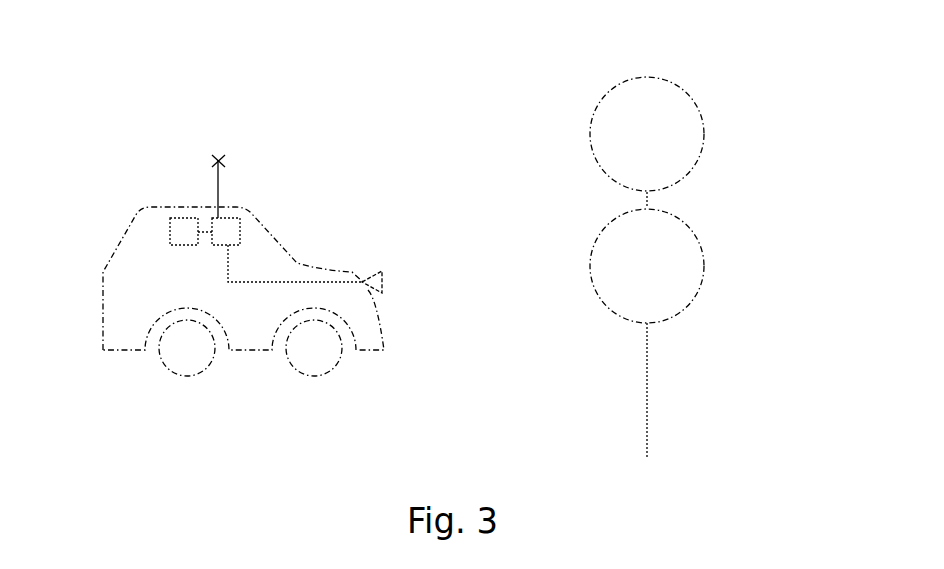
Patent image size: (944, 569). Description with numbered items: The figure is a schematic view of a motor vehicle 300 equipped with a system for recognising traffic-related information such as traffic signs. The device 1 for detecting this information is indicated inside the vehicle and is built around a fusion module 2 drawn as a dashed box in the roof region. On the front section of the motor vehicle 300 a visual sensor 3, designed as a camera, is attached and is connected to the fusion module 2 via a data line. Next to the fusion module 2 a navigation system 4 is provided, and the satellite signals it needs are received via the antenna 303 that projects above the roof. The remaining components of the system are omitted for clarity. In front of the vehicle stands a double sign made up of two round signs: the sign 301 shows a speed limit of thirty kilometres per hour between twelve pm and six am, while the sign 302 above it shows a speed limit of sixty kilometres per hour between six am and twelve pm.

The device for detecting traffic-related information 1 is at (170, 260).
The fusion module 2 is at (240, 230).
The visual sensor 3 is at (367, 277).
The navigation system 4 is at (170, 232).
The motor vehicle 300 is at (252, 351).
The sign 301 is at (697, 232).
The sign 302 is at (698, 100).
The antenna 303 is at (220, 175).